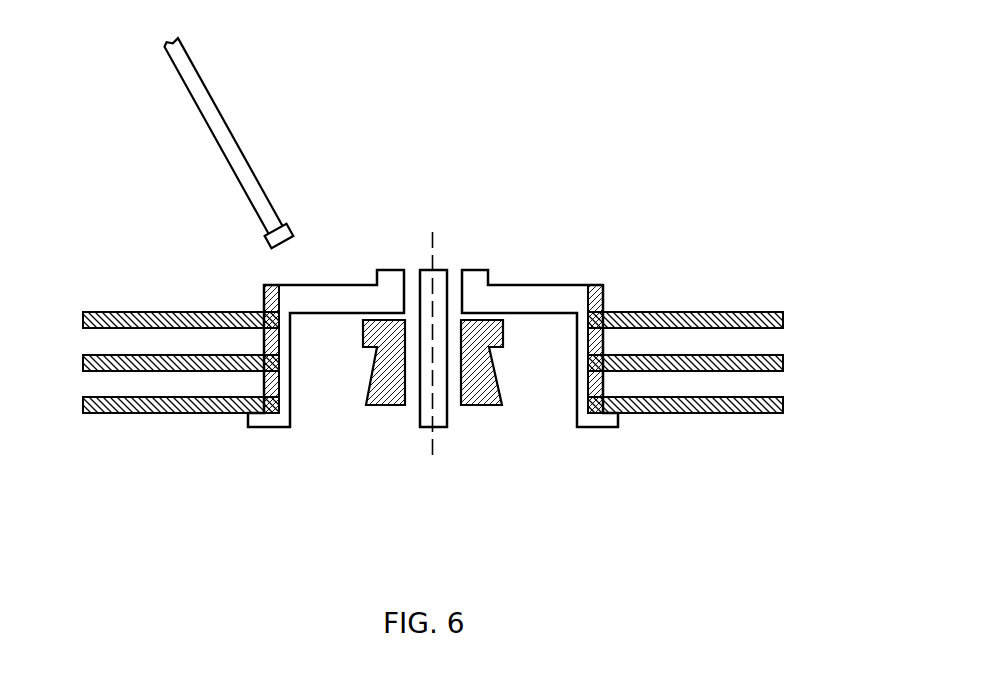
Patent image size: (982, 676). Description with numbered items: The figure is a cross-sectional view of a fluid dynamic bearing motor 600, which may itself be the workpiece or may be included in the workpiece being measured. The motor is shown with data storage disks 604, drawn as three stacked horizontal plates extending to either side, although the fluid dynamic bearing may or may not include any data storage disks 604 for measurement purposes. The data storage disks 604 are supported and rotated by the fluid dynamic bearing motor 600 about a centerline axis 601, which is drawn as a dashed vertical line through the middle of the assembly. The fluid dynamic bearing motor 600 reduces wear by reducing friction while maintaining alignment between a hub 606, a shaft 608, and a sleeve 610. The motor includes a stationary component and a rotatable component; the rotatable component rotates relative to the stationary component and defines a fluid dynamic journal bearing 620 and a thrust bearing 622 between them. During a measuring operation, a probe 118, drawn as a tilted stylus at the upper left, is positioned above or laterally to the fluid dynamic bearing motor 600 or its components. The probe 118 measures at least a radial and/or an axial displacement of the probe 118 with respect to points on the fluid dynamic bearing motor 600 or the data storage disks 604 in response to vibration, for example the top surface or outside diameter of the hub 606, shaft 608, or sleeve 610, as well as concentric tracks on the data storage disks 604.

The fluid dynamic bearing motor 600 is at (669, 93).
The probe 118 is at (263, 245).
The centerline axis 601 is at (432, 233).
The data storage disks 604 is at (735, 312).
The hub 606 is at (507, 283).
The shaft 608 is at (419, 270).
The sleeve 610 is at (503, 332).
The fluid dynamic journal bearing 620 is at (410, 408).
The thrust bearing 622 is at (355, 322).